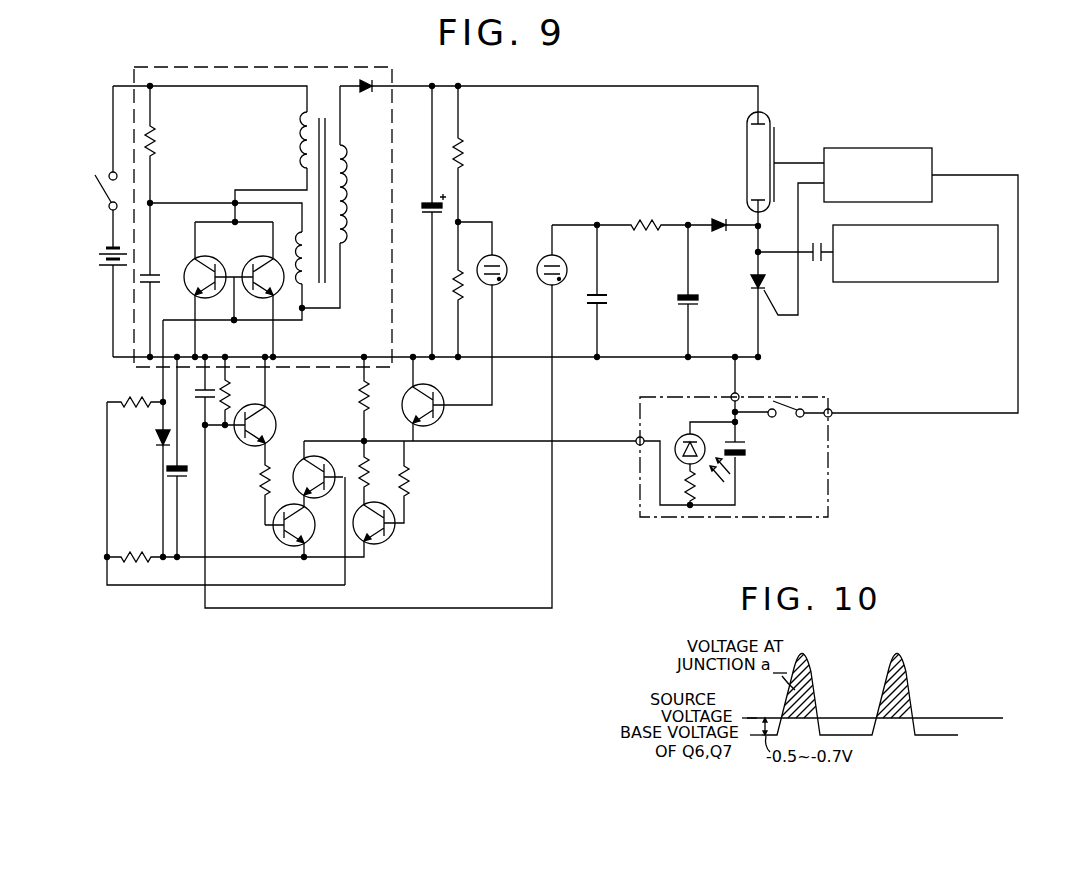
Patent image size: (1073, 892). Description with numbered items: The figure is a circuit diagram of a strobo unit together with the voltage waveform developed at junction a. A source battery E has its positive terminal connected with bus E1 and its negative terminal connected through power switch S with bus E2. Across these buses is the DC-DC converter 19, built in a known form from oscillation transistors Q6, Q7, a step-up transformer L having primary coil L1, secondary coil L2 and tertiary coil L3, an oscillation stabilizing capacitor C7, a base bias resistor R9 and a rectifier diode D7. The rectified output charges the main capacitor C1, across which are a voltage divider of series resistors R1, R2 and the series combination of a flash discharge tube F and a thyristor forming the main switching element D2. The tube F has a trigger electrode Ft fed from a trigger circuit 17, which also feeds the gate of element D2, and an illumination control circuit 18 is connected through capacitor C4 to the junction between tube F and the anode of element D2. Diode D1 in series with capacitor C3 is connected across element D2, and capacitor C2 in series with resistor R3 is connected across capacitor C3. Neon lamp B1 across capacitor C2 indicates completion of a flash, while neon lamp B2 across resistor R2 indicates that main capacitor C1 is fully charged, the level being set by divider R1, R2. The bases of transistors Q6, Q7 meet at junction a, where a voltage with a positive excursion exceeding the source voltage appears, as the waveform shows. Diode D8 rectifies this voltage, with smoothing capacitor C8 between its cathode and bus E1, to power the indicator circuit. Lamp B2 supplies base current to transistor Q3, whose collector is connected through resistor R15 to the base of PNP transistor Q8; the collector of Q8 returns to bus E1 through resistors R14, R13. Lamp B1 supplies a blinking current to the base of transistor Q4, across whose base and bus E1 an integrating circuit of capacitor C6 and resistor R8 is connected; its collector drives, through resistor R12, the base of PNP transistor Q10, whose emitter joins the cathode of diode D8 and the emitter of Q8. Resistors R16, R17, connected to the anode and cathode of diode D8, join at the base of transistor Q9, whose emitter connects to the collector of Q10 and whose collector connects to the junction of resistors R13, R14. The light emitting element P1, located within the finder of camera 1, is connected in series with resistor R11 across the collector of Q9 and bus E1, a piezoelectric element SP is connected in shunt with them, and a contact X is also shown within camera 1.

The DC-DC converter 19 is at (241, 67).
The power switch S is at (103, 191).
The source battery E is at (105, 258).
The bus E1 is at (120, 362).
The bus E2 is at (218, 86).
The base bias resistor R9 is at (155, 140).
The oscillation stabilizing capacitor C7 is at (157, 280).
The step-up transformer L is at (325, 108).
The primary coil L1 is at (306, 283).
The secondary coil L2 is at (348, 199).
The tertiary coil L3 is at (299, 141).
The rectifier diode D7 is at (366, 93).
The main capacitor C1 is at (423, 203).
The resistor R1 is at (462, 150).
The resistor R2 is at (460, 293).
The neon lamp B2 is at (490, 259).
The neon lamp B1 is at (558, 261).
The capacitor C2 is at (590, 297).
The capacitor C3 is at (678, 298).
The resistor R3 is at (648, 224).
The diode D1 is at (718, 222).
The main switching element D2 is at (750, 281).
The capacitor C4 is at (818, 262).
The flash discharge tube F is at (747, 158).
The trigger electrode Ft is at (775, 146).
The trigger circuit 17 is at (883, 148).
The illumination control circuit 18 is at (896, 282).
The oscillation transistor Q6 is at (209, 258).
The oscillation transistor Q7 is at (262, 258).
The junction a is at (232, 333).
The resistor R16 is at (136, 391).
The diode D8 is at (161, 441).
The smoothing capacitor C8 is at (183, 472).
The capacitor C6 is at (208, 397).
The resistor R8 is at (230, 384).
The resistor R17 is at (133, 556).
The transistor Q4 is at (271, 409).
The resistor R12 is at (262, 478).
The transistor Q9 is at (311, 497).
The PNP transistor Q10 is at (273, 525).
The resistor R13 is at (358, 389).
The transistor Q3 is at (439, 401).
The resistor R14 is at (370, 478).
The resistor R15 is at (413, 483).
The PNP transistor Q8 is at (396, 533).
The camera 1 is at (769, 517).
The light emitting element P1 is at (680, 440).
The resistor R11 is at (685, 492).
The piezoelectric element SP is at (745, 452).
The synchro switch X is at (790, 413).